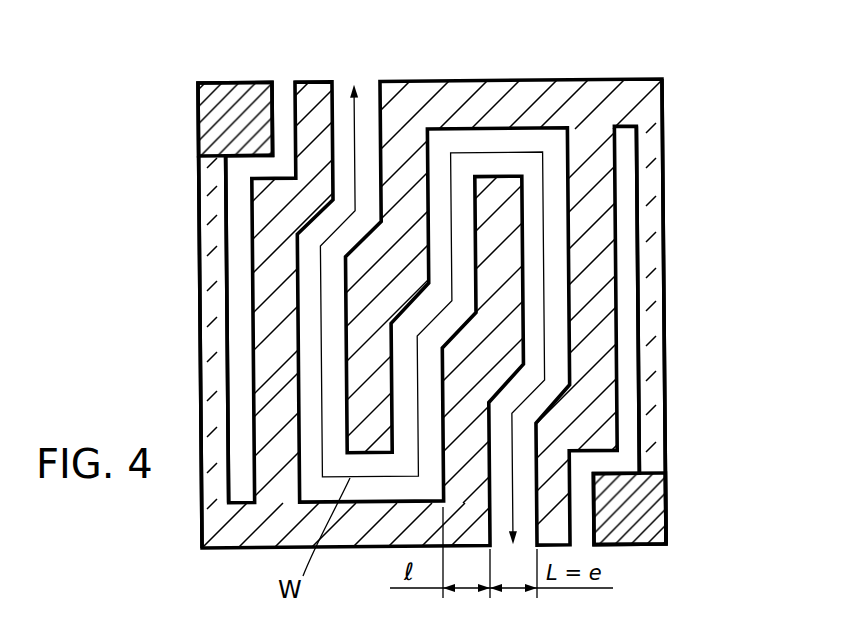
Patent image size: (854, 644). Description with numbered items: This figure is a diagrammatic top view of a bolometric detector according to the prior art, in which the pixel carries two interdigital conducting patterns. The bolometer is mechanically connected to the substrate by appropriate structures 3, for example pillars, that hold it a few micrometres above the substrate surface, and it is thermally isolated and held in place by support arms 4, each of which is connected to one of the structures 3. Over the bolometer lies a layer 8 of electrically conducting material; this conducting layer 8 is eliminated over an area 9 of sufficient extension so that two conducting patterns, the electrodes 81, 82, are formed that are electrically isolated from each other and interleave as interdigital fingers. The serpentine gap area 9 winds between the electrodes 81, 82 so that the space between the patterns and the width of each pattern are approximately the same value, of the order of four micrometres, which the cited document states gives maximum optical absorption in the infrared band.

The structure 3 is at (233, 97).
The support arm 4 is at (203, 239).
The layer of electrically conducting material 8 is at (626, 98).
The electrode 81 is at (501, 190).
The electrode 82 is at (574, 86).
The area 9 is at (366, 104).